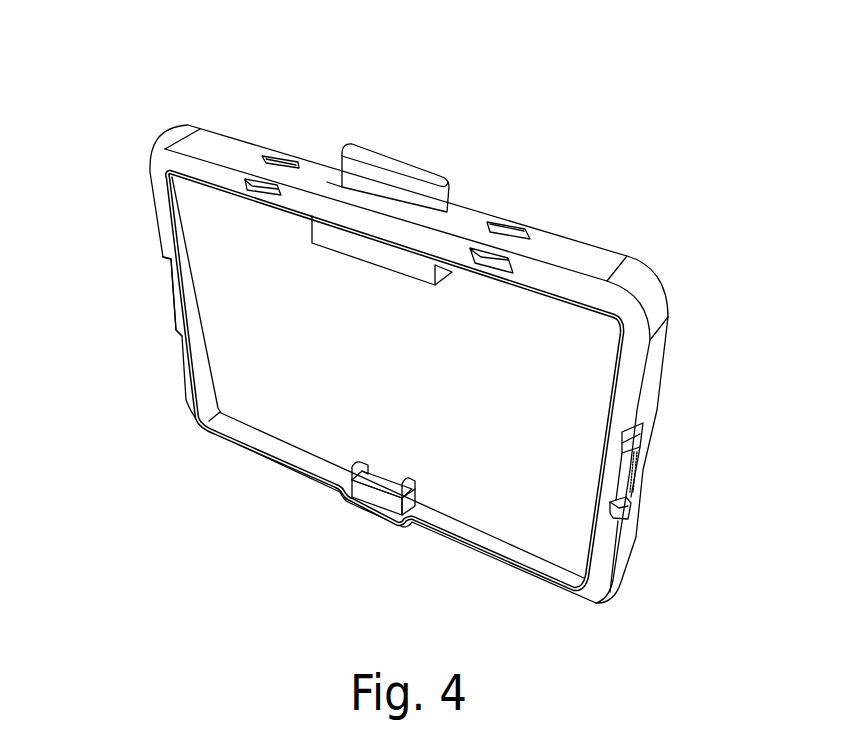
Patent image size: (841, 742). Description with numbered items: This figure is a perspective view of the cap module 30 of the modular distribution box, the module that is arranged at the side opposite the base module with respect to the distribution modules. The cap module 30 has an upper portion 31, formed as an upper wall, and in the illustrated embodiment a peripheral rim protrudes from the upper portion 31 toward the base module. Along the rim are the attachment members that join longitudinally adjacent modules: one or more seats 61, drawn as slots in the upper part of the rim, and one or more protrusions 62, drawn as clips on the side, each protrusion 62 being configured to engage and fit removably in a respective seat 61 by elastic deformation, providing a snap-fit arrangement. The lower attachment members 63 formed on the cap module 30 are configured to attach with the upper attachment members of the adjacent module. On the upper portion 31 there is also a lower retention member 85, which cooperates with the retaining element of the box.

The cap module 30 is at (524, 114).
The upper portion 31 is at (473, 210).
The seat 61 is at (268, 180).
The protrusion 62 is at (628, 462).
The lower attachment member 63 is at (166, 362).
The lower retention member 85 is at (375, 185).